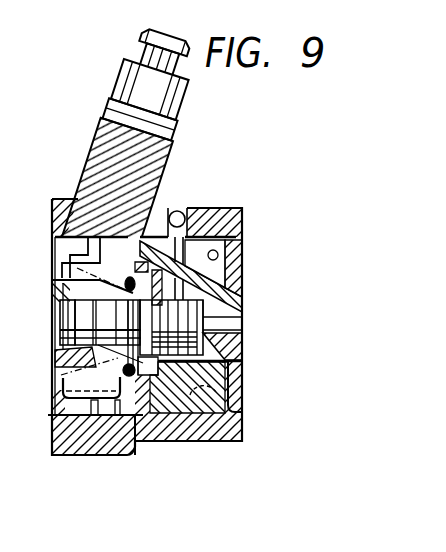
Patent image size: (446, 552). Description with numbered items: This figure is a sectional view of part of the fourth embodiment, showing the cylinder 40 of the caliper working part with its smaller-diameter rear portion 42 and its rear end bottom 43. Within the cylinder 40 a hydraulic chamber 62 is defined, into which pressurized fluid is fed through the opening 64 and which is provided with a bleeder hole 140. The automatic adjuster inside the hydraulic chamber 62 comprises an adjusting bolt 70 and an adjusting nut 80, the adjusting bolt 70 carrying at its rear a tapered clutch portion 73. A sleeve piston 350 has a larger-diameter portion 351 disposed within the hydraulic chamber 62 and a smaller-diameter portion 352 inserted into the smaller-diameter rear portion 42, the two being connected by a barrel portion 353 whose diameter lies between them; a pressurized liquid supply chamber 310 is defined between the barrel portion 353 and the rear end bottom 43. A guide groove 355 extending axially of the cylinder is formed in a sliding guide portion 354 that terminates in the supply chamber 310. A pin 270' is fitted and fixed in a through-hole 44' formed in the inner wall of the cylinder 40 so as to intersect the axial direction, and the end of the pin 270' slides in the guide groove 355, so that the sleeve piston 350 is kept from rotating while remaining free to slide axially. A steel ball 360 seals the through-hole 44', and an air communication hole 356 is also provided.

The sleeve piston 350 is at (249, 352).
The bleeder hole 140 is at (76, 203).
The sliding guide portion 354 is at (150, 208).
The through-hole 44' is at (160, 107).
The guide groove 355 is at (215, 210).
The steel ball 360 is at (184, 206).
The pin 270' is at (218, 223).
The rear end bottom of the cylinder 43 is at (236, 237).
The rear portion of smaller diameter 42 is at (243, 297).
The air communication hole 356 is at (243, 318).
The smaller-diameter portion 352 is at (240, 337).
The barrel portion 353 is at (197, 440).
The opening 64 is at (222, 450).
The cylinder 40 is at (92, 457).
The hydraulic chamber 62 is at (142, 442).
The adjusting bolt 70 is at (60, 321).
The adjusting nut 80 is at (58, 293).
The larger-diameter portion 351 is at (158, 442).
The tapered clutch portion 73 is at (167, 442).
The pressurized liquid supply chamber 310 is at (186, 442).